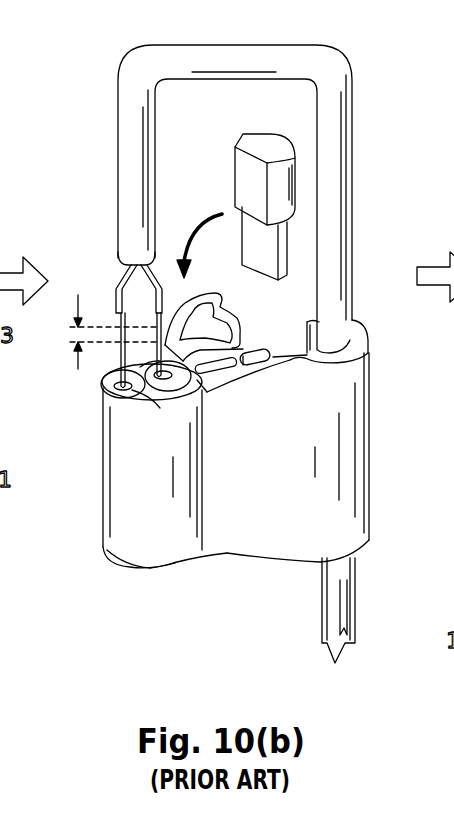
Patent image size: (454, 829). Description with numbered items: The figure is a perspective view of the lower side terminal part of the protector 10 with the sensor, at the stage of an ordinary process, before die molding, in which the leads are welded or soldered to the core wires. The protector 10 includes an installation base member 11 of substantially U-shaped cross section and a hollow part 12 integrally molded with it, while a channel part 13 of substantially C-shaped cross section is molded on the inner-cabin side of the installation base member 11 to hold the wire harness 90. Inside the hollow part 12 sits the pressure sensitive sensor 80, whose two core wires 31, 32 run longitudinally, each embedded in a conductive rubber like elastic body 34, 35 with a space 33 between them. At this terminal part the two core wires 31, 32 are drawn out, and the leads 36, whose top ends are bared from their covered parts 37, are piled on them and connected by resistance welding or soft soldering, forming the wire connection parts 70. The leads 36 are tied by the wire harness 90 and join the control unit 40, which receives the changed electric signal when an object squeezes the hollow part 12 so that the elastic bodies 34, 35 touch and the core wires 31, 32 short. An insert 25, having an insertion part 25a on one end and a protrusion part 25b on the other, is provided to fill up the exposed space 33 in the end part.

The protector with the sensor 10 is at (120, 577).
The installation base member 11 is at (342, 475).
The hollow part 12 is at (170, 553).
The channel part 13 is at (362, 334).
The insert 25 is at (308, 203).
The insertion part 25a is at (270, 240).
The protrusion part 25b is at (284, 190).
The core wire 31 is at (150, 362).
The core wire 32 is at (197, 380).
The space 33 is at (172, 390).
The rubber like elastic body 34 is at (140, 386).
The rubber like elastic body 35 is at (178, 390).
The lead 36 is at (113, 320).
The covered part 37 is at (116, 292).
The control unit 40 is at (340, 665).
The wire connection part 70 is at (98, 332).
The sensor 80 is at (118, 513).
The wire harness 90 is at (335, 161).